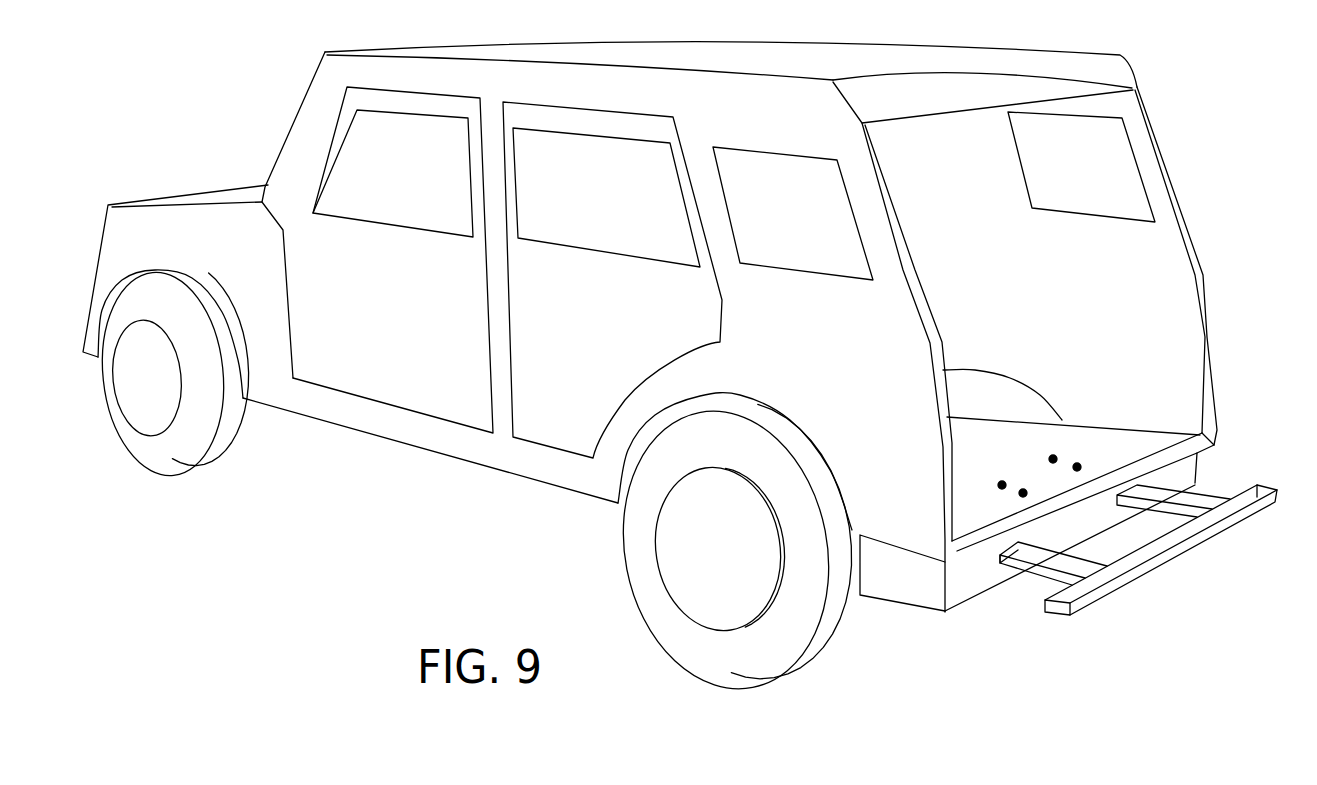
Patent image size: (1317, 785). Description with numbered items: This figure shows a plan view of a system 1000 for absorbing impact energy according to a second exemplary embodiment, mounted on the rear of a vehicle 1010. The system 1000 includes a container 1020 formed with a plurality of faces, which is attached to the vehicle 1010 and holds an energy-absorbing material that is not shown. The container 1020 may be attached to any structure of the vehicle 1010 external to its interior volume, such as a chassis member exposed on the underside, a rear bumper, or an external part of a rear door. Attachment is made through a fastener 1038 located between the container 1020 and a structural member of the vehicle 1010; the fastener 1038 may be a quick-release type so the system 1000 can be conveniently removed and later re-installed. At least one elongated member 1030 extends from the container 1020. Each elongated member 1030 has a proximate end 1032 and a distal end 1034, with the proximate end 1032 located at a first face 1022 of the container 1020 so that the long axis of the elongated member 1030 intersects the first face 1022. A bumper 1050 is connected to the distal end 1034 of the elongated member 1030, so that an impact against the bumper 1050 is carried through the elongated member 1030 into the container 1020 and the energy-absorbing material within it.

The system for absorbing impact energy 1000 is at (694, 383).
The vehicle 1010 is at (405, 428).
The container 1020 is at (903, 580).
The first face 1022 is at (1187, 462).
The elongated member 1030 is at (1028, 572).
The proximate end 1032 is at (1002, 563).
The distal end 1034 is at (1093, 563).
The fastener 1038 is at (1002, 485).
The bumper 1050 is at (1072, 598).